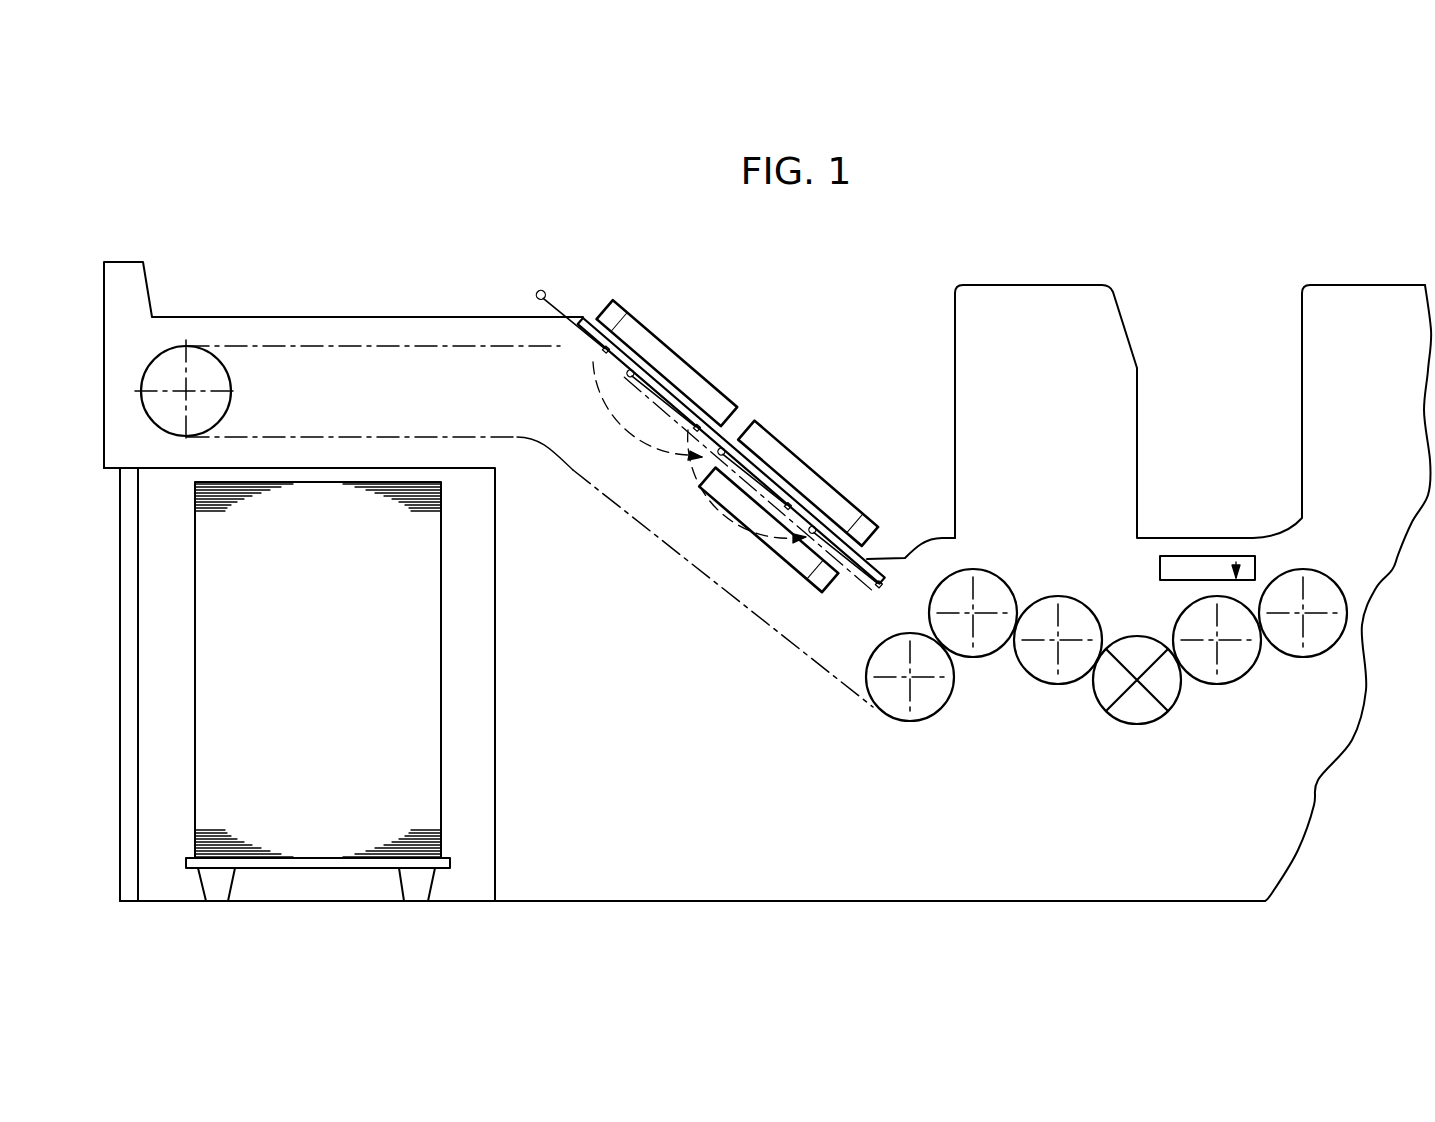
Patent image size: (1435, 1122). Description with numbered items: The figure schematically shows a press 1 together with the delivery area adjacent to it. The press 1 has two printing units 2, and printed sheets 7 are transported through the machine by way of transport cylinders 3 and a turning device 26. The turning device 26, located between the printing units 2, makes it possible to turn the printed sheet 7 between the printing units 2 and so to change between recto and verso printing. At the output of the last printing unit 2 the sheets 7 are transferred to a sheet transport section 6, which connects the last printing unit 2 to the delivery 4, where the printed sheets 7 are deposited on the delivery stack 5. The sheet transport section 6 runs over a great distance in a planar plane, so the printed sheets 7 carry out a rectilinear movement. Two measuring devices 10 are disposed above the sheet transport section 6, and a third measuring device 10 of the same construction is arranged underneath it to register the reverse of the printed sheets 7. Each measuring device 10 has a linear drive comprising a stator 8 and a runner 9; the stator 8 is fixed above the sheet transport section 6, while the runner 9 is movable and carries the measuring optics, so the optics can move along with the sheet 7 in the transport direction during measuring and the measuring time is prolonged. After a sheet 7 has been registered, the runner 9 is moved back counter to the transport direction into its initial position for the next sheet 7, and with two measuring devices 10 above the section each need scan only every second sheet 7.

The press 1 is at (1200, 218).
The printing unit 2 is at (1315, 337).
The transport cylinder 3 is at (937, 700).
The delivery 4 is at (353, 285).
The delivery stack 5 is at (335, 808).
The sheet transport section 6 is at (743, 415).
The printed sheet 7 is at (584, 327).
The stator 8 is at (708, 390).
The runner 9 is at (617, 325).
The measuring device 10 is at (733, 387).
The turning device 26 is at (1133, 715).